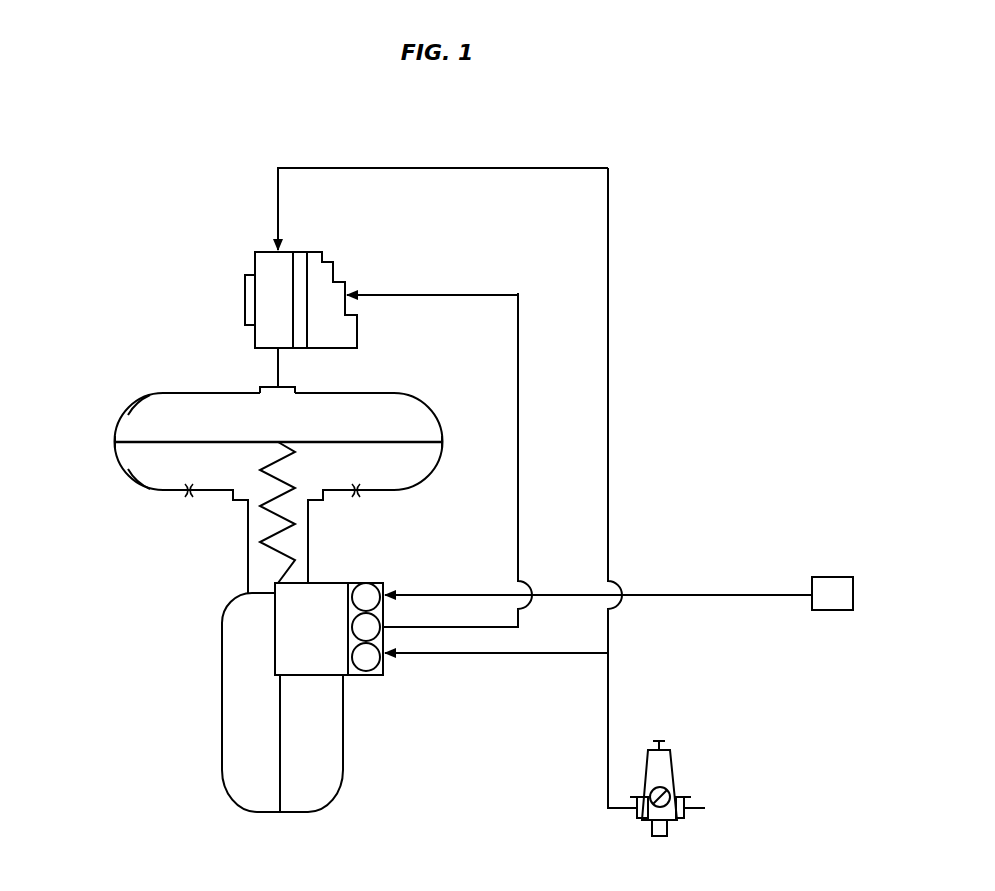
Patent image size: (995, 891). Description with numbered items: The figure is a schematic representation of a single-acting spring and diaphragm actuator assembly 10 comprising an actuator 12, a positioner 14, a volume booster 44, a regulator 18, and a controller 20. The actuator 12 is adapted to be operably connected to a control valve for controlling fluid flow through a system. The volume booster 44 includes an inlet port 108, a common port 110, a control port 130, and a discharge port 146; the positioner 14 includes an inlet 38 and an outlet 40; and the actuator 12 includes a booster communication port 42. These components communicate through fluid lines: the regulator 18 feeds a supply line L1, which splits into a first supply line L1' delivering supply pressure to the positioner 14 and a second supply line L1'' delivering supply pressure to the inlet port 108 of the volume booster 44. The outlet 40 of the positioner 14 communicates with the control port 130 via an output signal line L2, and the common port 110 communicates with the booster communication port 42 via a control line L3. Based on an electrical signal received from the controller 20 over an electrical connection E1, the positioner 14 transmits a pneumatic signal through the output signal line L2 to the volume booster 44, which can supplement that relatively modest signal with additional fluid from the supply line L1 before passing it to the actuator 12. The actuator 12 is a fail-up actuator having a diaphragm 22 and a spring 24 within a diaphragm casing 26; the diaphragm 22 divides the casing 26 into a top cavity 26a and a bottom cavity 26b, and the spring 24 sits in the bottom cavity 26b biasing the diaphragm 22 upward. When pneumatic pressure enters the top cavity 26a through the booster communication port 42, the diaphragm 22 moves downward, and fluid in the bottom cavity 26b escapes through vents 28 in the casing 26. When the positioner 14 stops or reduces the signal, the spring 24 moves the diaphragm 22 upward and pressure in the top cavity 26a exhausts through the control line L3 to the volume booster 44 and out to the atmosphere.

The single-acting spring and diaphragm actuator assembly 10 is at (118, 223).
The actuator 12 is at (219, 638).
The positioner 14 is at (386, 680).
The regulator 18 is at (676, 762).
The controller 20 is at (832, 612).
The diaphragm 22 is at (164, 440).
The spring 24 is at (274, 528).
The diaphragm casing 26 is at (111, 442).
The top cavity 26a is at (128, 418).
The bottom cavity 26b is at (128, 466).
The vents 28 is at (188, 497).
The inlet 38 is at (386, 662).
The outlet 40 is at (386, 620).
The booster communication port 42 is at (296, 388).
The volume booster 44 is at (249, 252).
The inlet port 108 is at (275, 250).
The common port 110 is at (266, 356).
The control port 130 is at (349, 290).
The discharge port 146 is at (342, 351).
The supply line L1 is at (632, 730).
The first supply line L1' is at (496, 676).
The second supply line L1'' is at (636, 410).
The output signal line L2 is at (520, 512).
The control line L3 is at (272, 367).
The electrical connection E1 is at (705, 594).